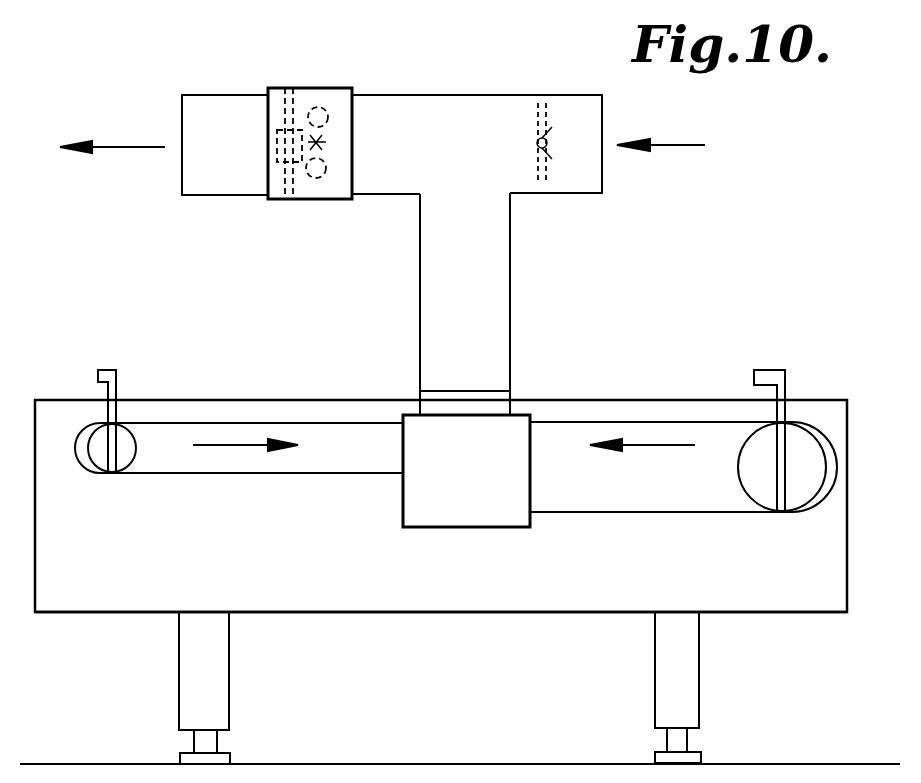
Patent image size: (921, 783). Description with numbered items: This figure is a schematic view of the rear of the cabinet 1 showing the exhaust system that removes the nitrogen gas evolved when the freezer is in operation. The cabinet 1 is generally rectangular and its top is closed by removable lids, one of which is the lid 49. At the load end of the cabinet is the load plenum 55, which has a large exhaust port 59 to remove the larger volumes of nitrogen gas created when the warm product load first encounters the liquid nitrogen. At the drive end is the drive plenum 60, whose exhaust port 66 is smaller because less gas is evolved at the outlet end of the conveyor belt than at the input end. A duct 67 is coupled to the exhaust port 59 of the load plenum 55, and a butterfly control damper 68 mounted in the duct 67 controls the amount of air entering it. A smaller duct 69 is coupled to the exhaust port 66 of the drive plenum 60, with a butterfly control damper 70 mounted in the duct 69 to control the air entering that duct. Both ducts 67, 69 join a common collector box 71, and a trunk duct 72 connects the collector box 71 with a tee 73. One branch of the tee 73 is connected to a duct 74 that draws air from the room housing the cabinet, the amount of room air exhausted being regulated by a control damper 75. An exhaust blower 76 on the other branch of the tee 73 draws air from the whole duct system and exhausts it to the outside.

The cabinet 1 is at (547, 613).
The removable lid 49 is at (687, 710).
The load plenum 55 is at (848, 556).
The exhaust port 59 is at (817, 427).
The drive plenum 60 is at (48, 588).
The exhaust port 66 is at (86, 422).
The duct 67 is at (688, 512).
The butterfly control damper 68 is at (792, 513).
The duct 69 is at (272, 473).
The butterfly control damper 70 is at (123, 474).
The collector box 71 is at (400, 510).
The trunk duct 72 is at (510, 333).
The tee 73 is at (465, 80).
The duct 74 is at (565, 195).
The control damper 75 is at (564, 112).
The exhaust blower 76 is at (345, 200).